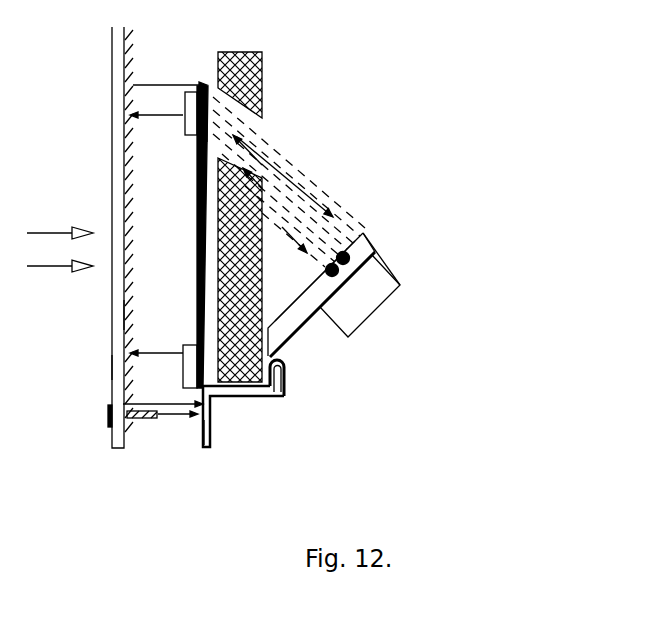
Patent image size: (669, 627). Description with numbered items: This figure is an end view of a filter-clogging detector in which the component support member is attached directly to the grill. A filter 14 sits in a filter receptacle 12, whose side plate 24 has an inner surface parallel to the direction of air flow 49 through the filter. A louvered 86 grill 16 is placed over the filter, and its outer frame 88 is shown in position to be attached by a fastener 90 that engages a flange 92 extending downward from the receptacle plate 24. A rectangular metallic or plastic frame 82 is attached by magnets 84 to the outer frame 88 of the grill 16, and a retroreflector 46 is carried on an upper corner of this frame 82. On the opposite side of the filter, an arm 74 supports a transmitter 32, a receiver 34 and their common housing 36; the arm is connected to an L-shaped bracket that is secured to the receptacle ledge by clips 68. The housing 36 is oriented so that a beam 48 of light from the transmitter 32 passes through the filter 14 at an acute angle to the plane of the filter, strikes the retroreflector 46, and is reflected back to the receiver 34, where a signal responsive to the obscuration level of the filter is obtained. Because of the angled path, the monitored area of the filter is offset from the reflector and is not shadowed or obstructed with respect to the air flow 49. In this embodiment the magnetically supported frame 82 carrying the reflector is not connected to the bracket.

The filter receptacle 12 is at (238, 398).
The filter 14 is at (262, 85).
The grill 16 is at (108, 62).
The side plate 24 is at (283, 397).
The transmitter 32 is at (350, 255).
The receiver 34 is at (343, 273).
The housing 36 is at (388, 262).
The retroreflector 46 is at (207, 132).
The beam 48 is at (288, 195).
The air flow 49 is at (56, 249).
The clips 68 is at (290, 374).
The arm 74 is at (300, 334).
The frame 82 is at (190, 186).
The magnets 84 is at (184, 127).
The louvers 86 is at (127, 317).
The outer frame 88 is at (112, 368).
The fastener 90 is at (152, 420).
The flange 92 is at (212, 432).